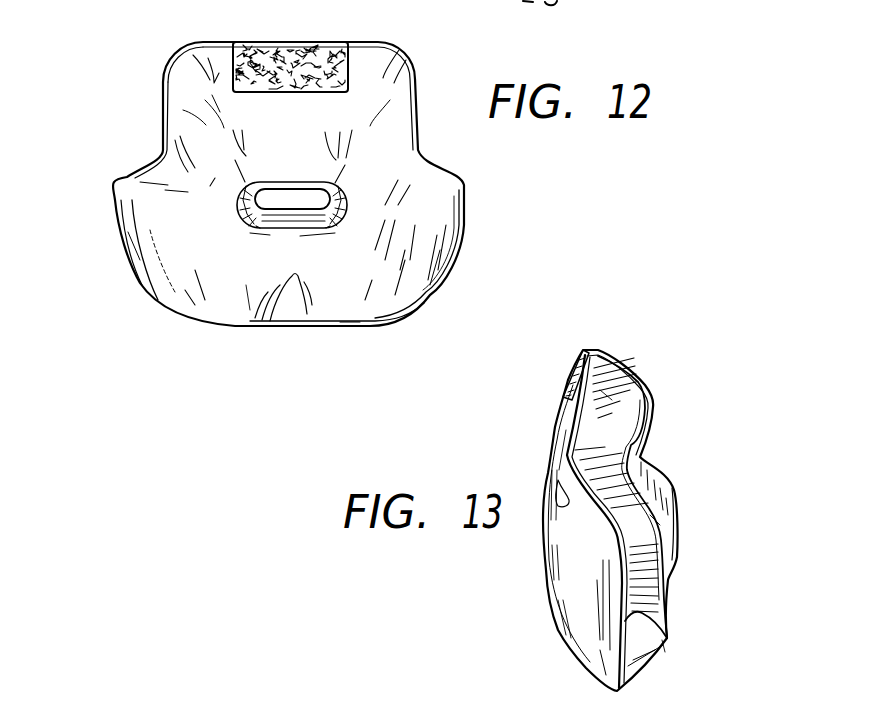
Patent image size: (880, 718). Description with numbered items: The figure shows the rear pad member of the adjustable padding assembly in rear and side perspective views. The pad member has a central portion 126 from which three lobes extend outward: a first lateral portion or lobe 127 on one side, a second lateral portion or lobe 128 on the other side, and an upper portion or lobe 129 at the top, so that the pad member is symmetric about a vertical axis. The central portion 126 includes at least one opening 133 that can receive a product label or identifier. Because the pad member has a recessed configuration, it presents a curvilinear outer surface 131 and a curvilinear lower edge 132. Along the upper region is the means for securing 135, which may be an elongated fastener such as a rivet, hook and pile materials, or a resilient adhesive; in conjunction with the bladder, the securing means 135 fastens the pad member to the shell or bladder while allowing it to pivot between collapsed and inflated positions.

In FIG. 12, the central portion 126 is at (253, 275).
In FIG. 13, the central portion 126 is at (670, 518).
In FIG. 12, the first lateral portion or lobe 127 is at (435, 242).
In FIG. 13, the first lateral portion or lobe 127 is at (670, 638).
In FIG. 12, the second lateral portion or lobe 128 is at (157, 240).
In FIG. 12, the upper portion or lobe 129 is at (188, 117).
In FIG. 13, the upper portion or lobe 129 is at (613, 400).
In FIG. 12, the outer surface 131 is at (398, 257).
In FIG. 13, the outer surface 131 is at (600, 605).
In FIG. 12, the lower edge 132 is at (368, 320).
In FIG. 12, the opening 133 is at (296, 200).
In FIG. 12, the means for securing 135 is at (307, 48).
In FIG. 13, the means for securing 135 is at (573, 360).